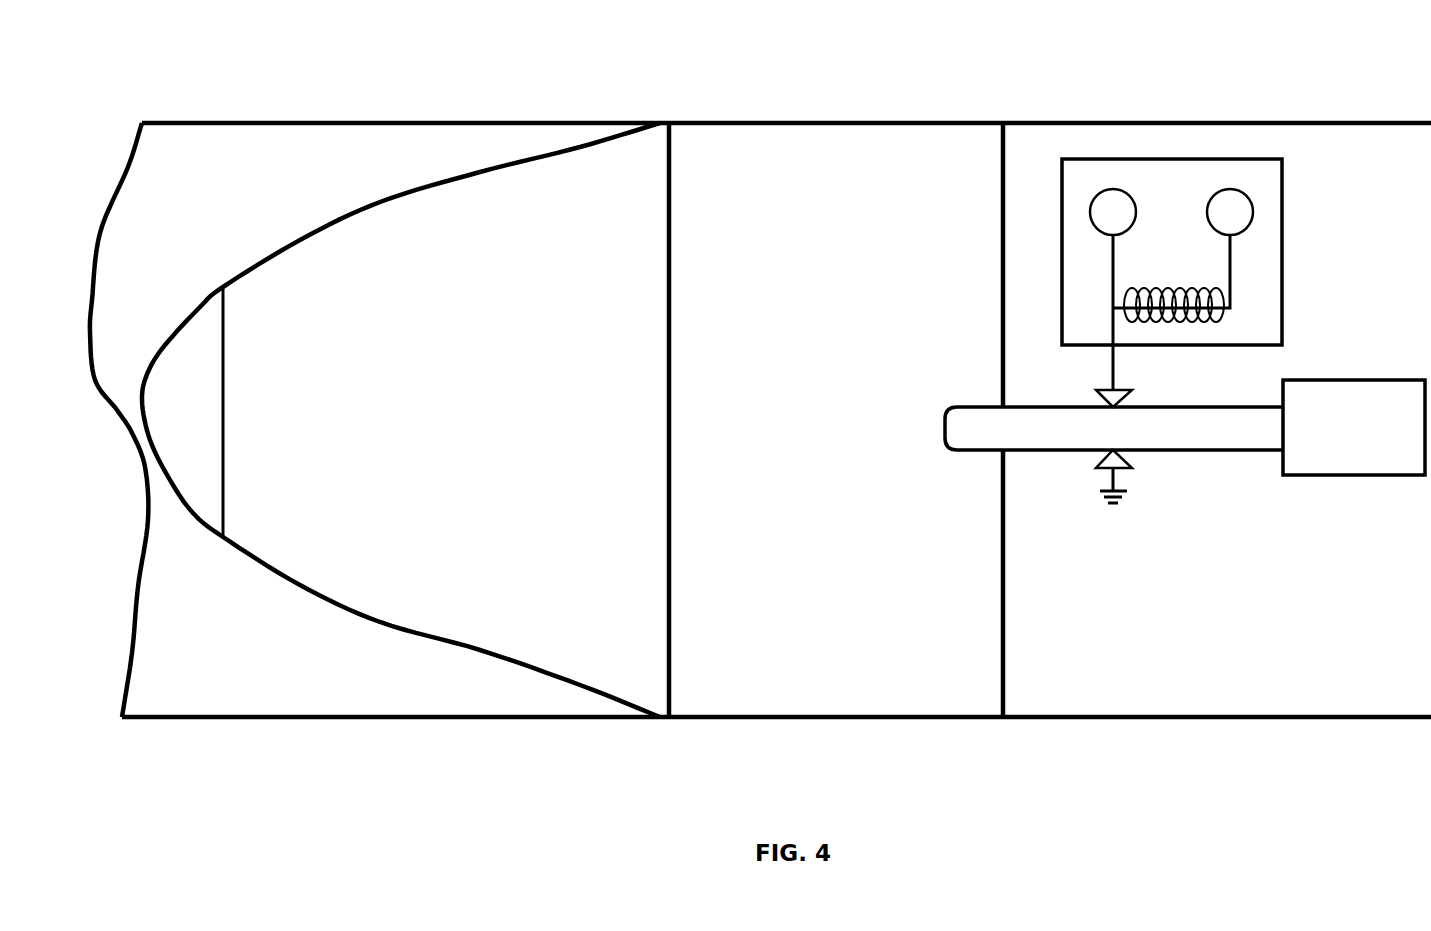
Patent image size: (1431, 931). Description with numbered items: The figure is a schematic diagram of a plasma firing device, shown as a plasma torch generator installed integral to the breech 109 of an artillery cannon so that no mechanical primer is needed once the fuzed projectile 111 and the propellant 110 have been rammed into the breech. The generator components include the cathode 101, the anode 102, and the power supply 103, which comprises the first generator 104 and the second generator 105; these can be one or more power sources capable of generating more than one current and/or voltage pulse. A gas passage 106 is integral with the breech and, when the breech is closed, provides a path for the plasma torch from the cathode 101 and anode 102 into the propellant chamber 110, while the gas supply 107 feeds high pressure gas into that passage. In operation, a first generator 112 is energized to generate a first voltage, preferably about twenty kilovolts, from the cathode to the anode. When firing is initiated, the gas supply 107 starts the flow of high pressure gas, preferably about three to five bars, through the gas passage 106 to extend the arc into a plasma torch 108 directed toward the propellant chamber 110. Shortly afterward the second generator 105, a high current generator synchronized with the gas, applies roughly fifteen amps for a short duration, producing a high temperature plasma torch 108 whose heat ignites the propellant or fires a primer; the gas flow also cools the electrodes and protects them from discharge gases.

The cathode 101 is at (1100, 393).
The anode 102 is at (1097, 464).
The power supply 103 is at (1268, 262).
The first generator G1 104 is at (1237, 189).
The second generator G2 105 is at (1125, 190).
The gas passage 106 is at (1168, 442).
The gas supply 107 is at (1340, 390).
The plasma torch 108 is at (973, 417).
The breech 109 is at (1247, 642).
The propellant chamber 110 is at (854, 173).
The fuzed projectile 111 is at (362, 285).
The first generator 112 is at (200, 377).